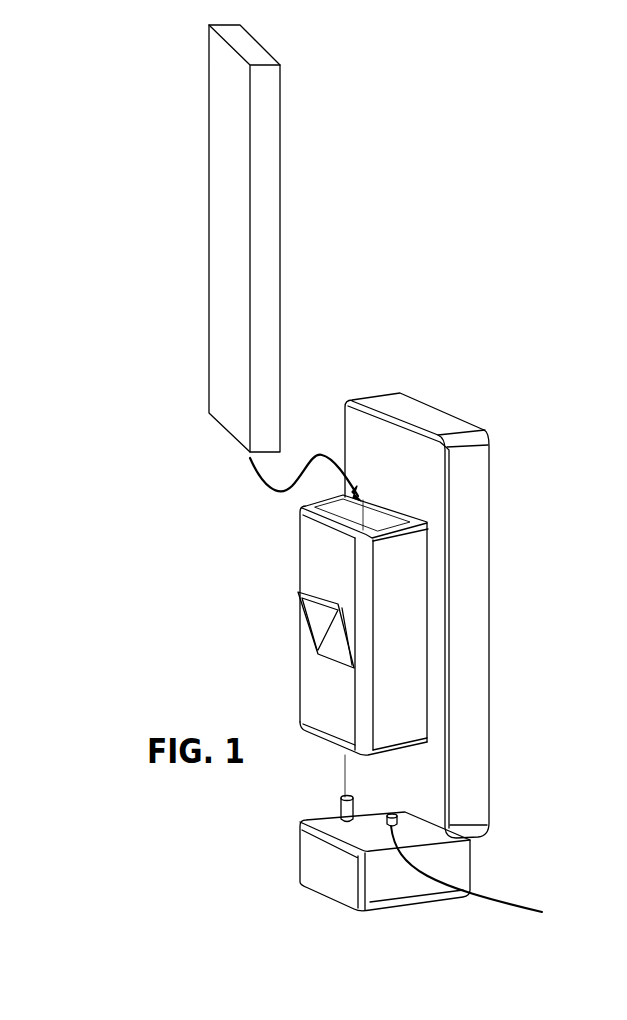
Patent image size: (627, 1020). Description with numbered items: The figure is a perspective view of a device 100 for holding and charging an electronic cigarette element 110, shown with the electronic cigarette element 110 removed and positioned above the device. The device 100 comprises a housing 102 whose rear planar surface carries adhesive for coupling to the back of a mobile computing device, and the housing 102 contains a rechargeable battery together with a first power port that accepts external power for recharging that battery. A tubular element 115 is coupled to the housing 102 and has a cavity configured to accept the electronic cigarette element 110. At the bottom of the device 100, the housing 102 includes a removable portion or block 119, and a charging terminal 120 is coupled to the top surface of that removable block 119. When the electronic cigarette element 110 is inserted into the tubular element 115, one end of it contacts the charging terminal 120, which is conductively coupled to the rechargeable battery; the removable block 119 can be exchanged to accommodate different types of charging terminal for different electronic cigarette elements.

The device 100 is at (548, 805).
The housing 102 is at (489, 528).
The electronic cigarette element 110 is at (281, 260).
The tubular element 115 is at (300, 580).
The removable block 119 is at (298, 874).
The charging terminal 120 is at (486, 869).